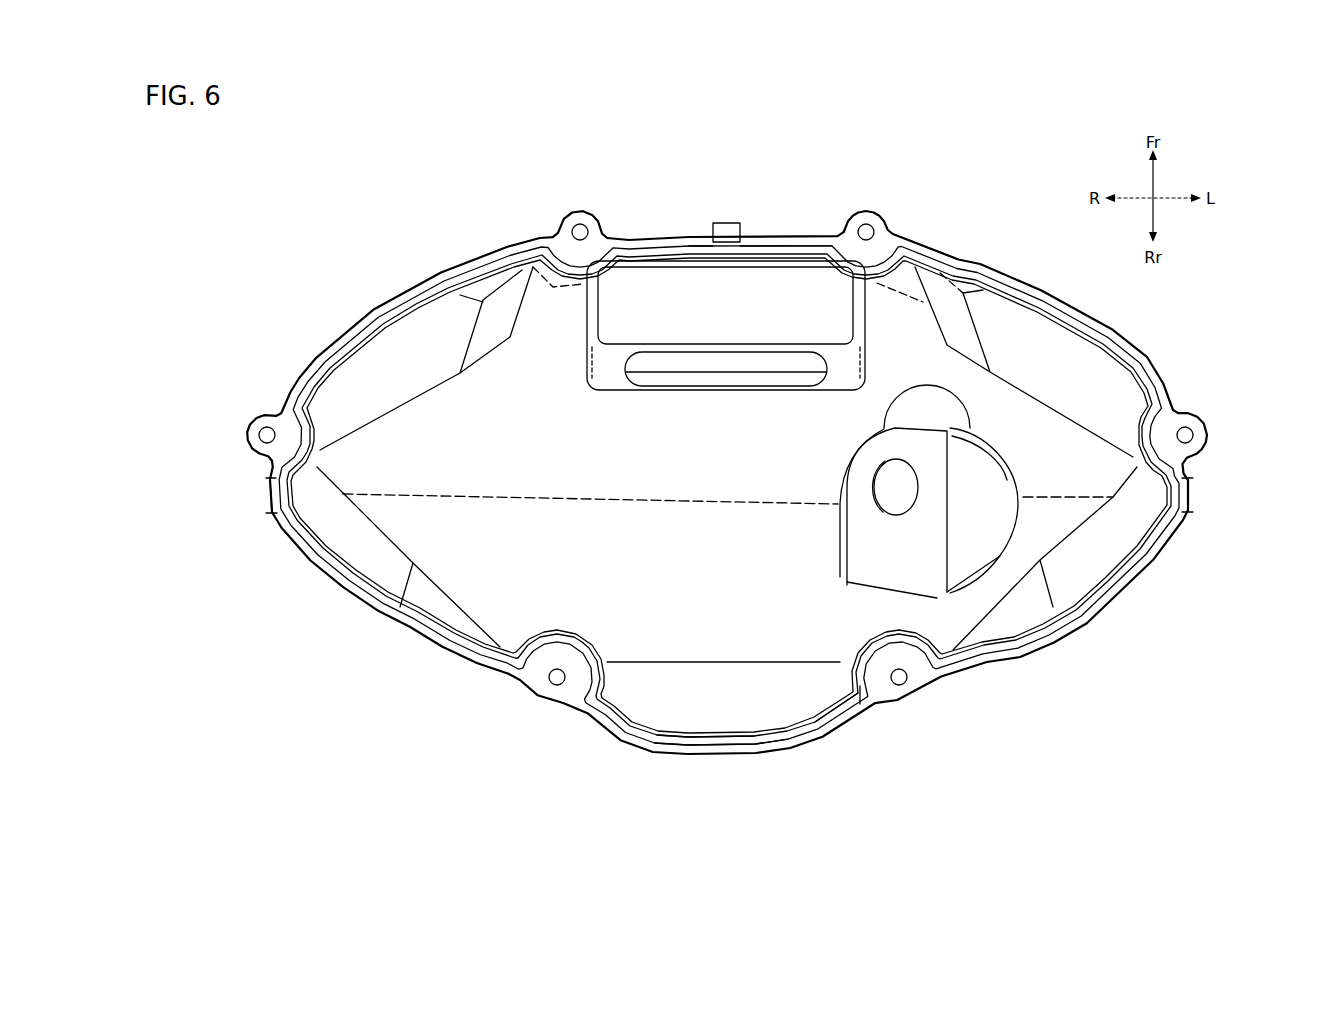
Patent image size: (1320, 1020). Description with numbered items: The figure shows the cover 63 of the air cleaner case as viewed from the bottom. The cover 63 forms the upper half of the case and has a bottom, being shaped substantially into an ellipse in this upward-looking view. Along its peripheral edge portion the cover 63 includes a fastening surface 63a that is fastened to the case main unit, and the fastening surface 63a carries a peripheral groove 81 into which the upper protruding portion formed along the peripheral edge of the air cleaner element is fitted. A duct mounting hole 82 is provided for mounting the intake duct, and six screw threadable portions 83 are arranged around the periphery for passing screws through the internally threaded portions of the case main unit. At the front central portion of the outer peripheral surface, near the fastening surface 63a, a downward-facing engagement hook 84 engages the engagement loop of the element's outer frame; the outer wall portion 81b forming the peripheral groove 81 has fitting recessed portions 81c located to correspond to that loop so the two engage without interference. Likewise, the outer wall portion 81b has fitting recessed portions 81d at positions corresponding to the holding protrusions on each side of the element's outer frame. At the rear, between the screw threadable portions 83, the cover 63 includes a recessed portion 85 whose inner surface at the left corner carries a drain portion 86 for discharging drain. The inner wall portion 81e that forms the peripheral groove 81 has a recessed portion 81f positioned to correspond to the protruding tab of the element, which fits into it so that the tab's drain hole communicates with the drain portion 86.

The cover 63 is at (432, 273).
The fastening surface 63a is at (887, 237).
The peripheral groove 81 is at (988, 277).
The outer wall portion 81b is at (788, 236).
The fitting recessed portion 81c is at (707, 234).
The fitting recessed portion 81d is at (268, 495).
The inner wall portion 81e is at (787, 735).
The recessed portion 81f is at (856, 716).
The duct mounting hole 82 is at (693, 353).
The screw threadable portions 83 is at (581, 226).
The engagement hook 84 is at (727, 232).
The recessed portion 85 is at (733, 733).
The drain portion 86 is at (845, 712).